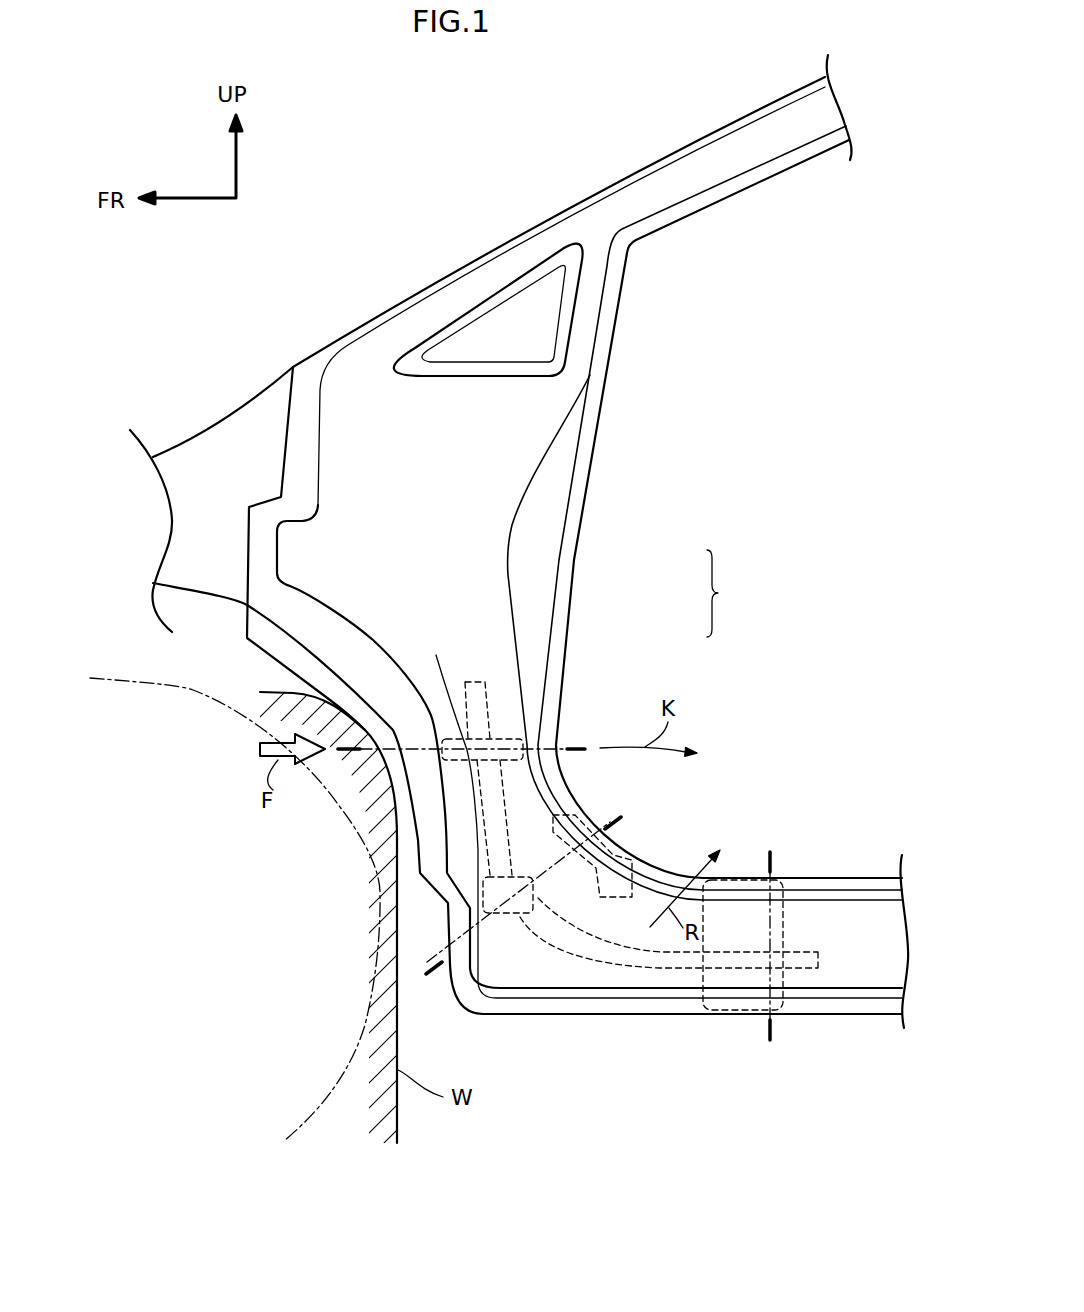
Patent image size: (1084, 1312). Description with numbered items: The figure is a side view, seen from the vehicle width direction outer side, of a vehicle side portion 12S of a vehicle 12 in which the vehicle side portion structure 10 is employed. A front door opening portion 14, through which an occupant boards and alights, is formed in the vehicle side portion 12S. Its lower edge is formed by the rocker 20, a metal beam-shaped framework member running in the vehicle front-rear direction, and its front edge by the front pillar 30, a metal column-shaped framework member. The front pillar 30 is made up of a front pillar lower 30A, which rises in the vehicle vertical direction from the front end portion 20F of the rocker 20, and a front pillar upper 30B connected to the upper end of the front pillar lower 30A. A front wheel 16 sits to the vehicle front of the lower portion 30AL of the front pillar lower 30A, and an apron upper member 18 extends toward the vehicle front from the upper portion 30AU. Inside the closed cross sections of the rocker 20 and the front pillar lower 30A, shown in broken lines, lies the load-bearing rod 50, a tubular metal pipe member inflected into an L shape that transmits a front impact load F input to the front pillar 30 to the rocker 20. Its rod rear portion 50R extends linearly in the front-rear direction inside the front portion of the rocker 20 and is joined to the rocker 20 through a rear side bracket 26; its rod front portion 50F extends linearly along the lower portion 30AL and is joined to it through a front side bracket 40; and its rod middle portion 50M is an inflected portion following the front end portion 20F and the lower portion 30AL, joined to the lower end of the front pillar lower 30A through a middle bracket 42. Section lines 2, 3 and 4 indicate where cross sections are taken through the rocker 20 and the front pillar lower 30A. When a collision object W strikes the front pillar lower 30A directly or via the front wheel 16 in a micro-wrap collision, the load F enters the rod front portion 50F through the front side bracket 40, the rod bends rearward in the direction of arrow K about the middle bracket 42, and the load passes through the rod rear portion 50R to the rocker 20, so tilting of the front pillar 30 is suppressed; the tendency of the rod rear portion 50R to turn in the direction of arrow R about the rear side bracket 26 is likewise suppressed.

The vehicle side portion structure 10 is at (615, 1082).
The vehicle 12 is at (366, 113).
The vehicle side portion 12S is at (362, 241).
The front door opening portion 14 is at (812, 187).
The front wheel 16 is at (128, 682).
The apron upper member 18 is at (208, 467).
The rocker 20 is at (862, 1028).
The front end portion 20F is at (497, 967).
The rear side bracket 26 is at (783, 913).
The front pillar 30 is at (641, 303).
The front pillar lower 30A is at (740, 593).
The upper portion 30AU is at (477, 473).
The lower portion 30AL is at (508, 707).
The front pillar upper 30B is at (684, 174).
The front side bracket 40 is at (448, 739).
The middle bracket 42 is at (627, 865).
The load-bearing rod 50 is at (624, 965).
The rod front portion 50F is at (466, 710).
The rod middle portion 50M is at (533, 915).
The rod rear portion 50R is at (740, 972).
The section line 2- 2 is at (786, 1033).
The section line 3- 3 is at (576, 736).
The section line 4- 4 is at (424, 960).